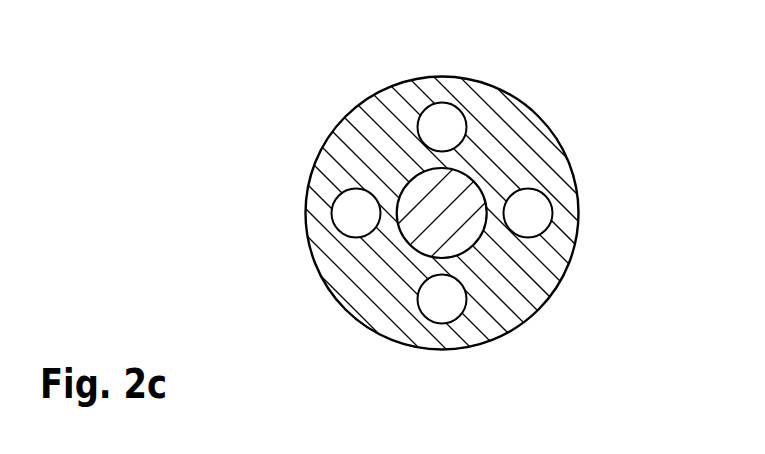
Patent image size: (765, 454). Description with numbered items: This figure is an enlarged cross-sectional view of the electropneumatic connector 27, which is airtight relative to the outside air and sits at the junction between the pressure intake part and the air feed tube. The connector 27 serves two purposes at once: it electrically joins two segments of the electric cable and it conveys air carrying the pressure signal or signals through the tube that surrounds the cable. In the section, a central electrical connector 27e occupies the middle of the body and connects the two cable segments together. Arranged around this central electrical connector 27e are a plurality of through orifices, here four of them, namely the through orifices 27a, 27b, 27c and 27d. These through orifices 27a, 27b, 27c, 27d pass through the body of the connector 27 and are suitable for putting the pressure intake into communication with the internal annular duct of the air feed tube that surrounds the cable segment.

The electropneumatic connector 27 is at (322, 281).
The through orifice 27a is at (445, 115).
The through orifice 27b is at (334, 226).
The through orifice 27c is at (454, 319).
The through orifice 27d is at (541, 193).
The central electrical connector 27e is at (408, 180).